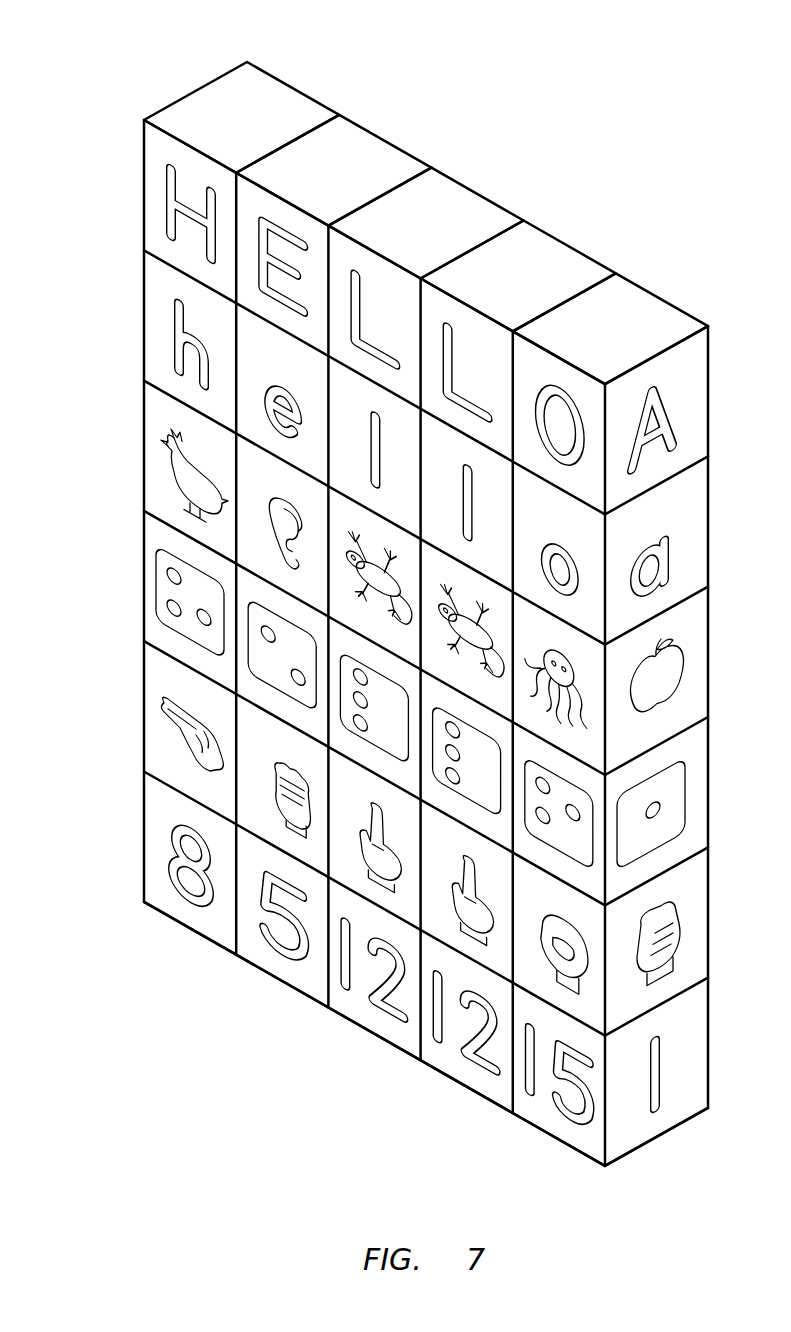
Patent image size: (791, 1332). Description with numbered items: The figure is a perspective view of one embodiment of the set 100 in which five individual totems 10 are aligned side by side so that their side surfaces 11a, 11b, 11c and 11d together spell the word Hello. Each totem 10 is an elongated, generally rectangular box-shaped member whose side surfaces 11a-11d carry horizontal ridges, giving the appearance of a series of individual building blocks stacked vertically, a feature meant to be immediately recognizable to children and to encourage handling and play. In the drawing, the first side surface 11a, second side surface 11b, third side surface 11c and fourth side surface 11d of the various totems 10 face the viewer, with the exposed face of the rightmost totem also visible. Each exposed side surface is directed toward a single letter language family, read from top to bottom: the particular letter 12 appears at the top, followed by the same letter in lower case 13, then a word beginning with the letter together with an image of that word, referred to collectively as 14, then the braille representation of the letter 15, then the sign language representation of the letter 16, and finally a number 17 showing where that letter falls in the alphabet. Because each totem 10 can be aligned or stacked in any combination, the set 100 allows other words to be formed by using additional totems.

The set 100 is at (150, 75).
The totem 10 is at (197, 955).
The first side surface 11a is at (300, 220).
The second side surface 11b is at (393, 272).
The third side surface 11c is at (208, 162).
The fourth side surface 11d is at (485, 327).
The letter 12 is at (128, 185).
The letter in lower case 13 is at (128, 333).
The word and image 14 is at (128, 450).
The braille representation of the letter 15 is at (128, 585).
The sign language representation of the letter 16 is at (128, 712).
The number 17 is at (128, 840).